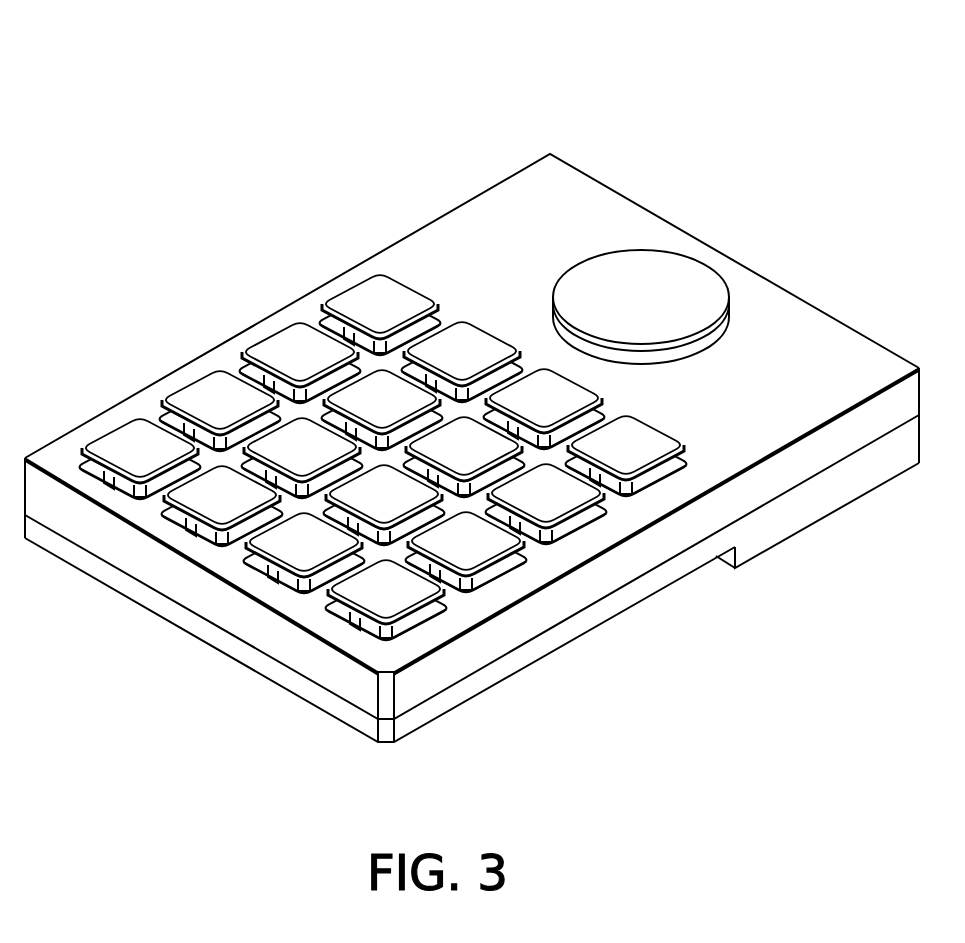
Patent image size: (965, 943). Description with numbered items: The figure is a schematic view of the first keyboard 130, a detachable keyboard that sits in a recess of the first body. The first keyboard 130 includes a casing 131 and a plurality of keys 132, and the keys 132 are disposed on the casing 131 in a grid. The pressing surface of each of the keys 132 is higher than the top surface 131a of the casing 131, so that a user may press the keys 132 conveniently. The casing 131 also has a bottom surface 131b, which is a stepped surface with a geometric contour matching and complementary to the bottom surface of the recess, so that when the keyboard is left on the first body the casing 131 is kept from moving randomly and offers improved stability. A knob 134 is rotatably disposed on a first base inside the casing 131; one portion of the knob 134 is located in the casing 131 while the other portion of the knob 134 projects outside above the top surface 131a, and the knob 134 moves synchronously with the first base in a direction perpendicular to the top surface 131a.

The first keyboard 130 is at (479, 377).
The casing 131 is at (479, 448).
The top surface of the casing 131a is at (837, 357).
The bottom surface of the casing 131b is at (617, 618).
The keys 132 is at (297, 350).
The knob 134 is at (677, 278).